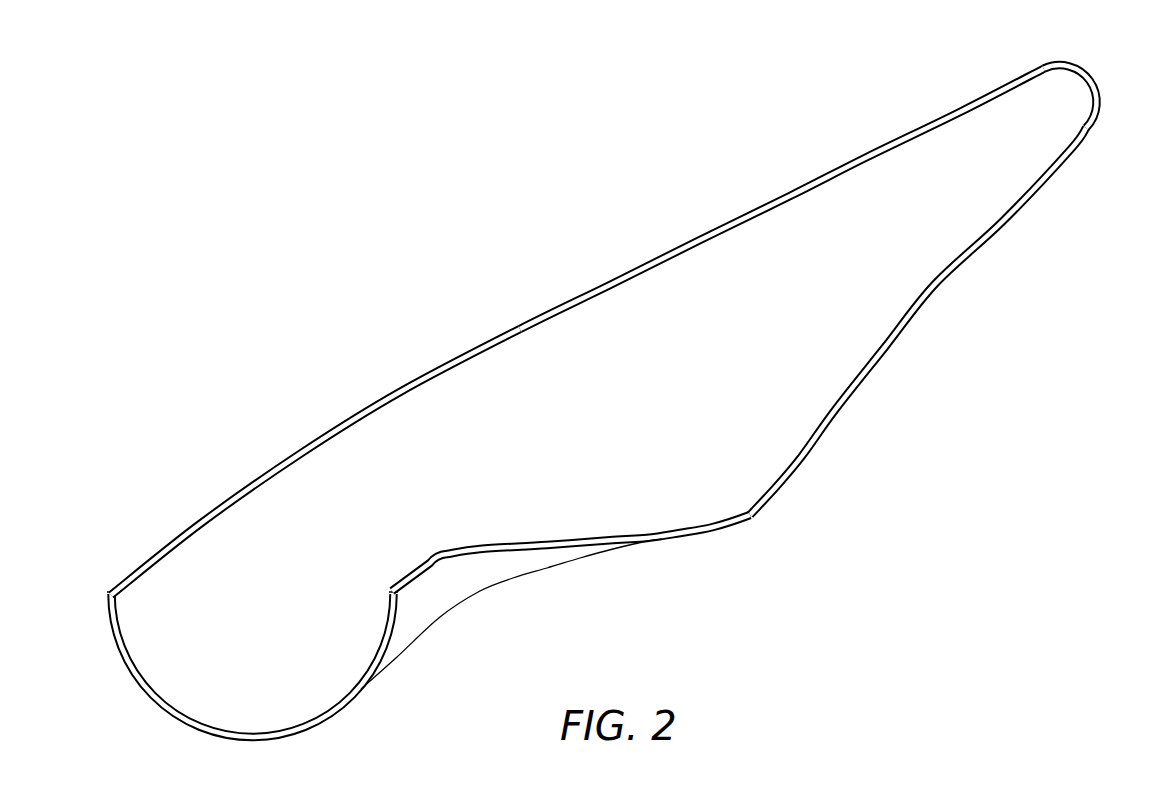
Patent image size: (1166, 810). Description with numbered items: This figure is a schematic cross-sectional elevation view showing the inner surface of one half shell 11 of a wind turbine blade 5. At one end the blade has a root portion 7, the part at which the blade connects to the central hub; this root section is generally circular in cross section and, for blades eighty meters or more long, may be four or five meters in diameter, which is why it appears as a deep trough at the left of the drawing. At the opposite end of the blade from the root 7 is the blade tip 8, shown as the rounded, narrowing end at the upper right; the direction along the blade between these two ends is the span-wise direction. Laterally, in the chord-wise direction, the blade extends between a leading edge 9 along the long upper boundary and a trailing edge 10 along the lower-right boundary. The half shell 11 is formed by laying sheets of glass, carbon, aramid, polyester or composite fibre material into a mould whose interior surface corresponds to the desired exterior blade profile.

The wind turbine blade 5 is at (524, 234).
The root portion 7 is at (382, 647).
The blade tip 8 is at (1082, 68).
The leading edge 9 is at (731, 214).
The trailing edge 10 is at (945, 281).
The half shell 11 is at (453, 358).